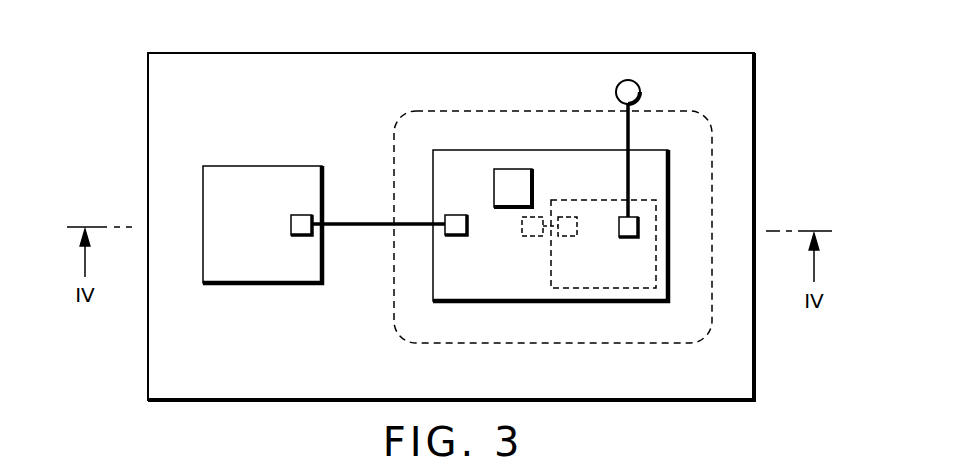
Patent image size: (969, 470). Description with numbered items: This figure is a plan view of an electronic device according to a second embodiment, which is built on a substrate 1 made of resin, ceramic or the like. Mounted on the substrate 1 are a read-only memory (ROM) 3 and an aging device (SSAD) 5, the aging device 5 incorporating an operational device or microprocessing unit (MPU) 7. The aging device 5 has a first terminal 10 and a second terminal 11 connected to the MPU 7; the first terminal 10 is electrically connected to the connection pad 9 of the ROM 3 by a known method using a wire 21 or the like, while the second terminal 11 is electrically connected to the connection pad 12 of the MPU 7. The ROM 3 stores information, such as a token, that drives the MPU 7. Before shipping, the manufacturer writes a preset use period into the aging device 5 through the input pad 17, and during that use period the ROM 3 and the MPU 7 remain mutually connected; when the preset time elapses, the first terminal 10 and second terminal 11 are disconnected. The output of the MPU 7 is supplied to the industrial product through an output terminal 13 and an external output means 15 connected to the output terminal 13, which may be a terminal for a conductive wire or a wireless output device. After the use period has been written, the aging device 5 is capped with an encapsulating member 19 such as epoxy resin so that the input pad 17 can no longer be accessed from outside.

The substrate 1 is at (754, 382).
The read-only memory (ROM) 3 is at (230, 283).
The aging device (SSAD) 5 is at (453, 290).
The microprocessing unit (MPU) 7 is at (608, 290).
The connection pad 9 is at (296, 215).
The first terminal 10 is at (452, 217).
The second terminal 11 is at (525, 238).
The connection pad 12 is at (563, 238).
The output terminal 13 is at (619, 232).
The external output means 15 is at (633, 88).
The input pad 17 is at (510, 190).
The encapsulating member 19 is at (397, 118).
The wire 21 is at (356, 226).